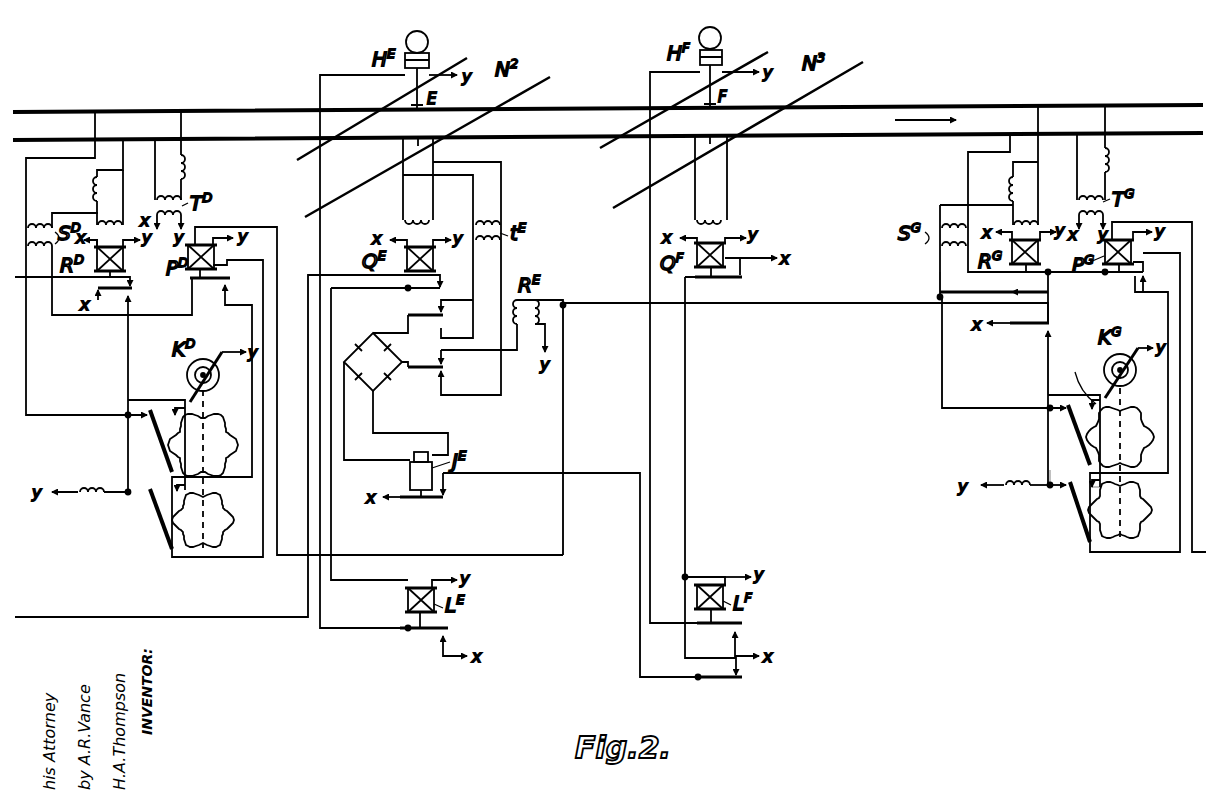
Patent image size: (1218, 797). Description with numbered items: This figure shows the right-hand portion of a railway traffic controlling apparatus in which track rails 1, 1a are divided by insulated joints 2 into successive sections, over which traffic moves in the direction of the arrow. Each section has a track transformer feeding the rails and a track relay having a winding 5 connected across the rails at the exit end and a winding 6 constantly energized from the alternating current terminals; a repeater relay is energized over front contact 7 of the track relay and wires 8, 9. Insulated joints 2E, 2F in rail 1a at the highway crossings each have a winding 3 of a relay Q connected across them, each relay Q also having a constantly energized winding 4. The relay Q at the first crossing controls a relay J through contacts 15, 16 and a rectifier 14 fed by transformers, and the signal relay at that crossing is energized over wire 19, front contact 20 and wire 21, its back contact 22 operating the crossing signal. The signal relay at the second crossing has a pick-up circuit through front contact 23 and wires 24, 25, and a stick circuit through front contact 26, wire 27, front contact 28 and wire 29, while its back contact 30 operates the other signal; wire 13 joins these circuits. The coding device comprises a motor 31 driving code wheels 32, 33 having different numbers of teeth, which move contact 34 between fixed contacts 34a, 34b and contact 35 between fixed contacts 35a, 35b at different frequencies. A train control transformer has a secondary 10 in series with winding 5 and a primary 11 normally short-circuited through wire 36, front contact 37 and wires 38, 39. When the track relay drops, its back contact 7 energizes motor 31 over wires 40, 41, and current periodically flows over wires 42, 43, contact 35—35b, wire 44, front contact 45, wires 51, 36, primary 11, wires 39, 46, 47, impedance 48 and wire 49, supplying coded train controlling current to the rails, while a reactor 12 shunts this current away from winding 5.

The track rail 1 is at (925, 100).
The track rail 1a is at (894, 148).
The insulated joints 2 is at (1057, 132).
The insulated joint 2E is at (412, 129).
The insulated joint 2F is at (704, 128).
The winding of relay Q 3 is at (565, 179).
The winding of relay Q 4 is at (583, 257).
The track relay winding 5 is at (568, 197).
The track relay winding 6 is at (535, 259).
The contact of track relay R 7 is at (573, 390).
The wire 8 is at (1025, 299).
The wire 9 is at (563, 372).
The secondary of transformer S^G 10 is at (963, 215).
The primary of transformer S^G 11 is at (498, 278).
The reactor 12 is at (1013, 190).
The conductor 13 is at (563, 305).
The rectifier 14 is at (360, 352).
The contact of relay Q 15 is at (407, 319).
The contact of relay Q 16 is at (444, 345).
The wire 19 is at (230, 616).
The front contact of relay Q^E 20 is at (360, 290).
The wire 21 is at (331, 490).
The back contact of relay L^E 22 is at (424, 633).
The front contact of relay Q^F 23 is at (710, 278).
The wire 24 is at (685, 336).
The wire 25 is at (696, 577).
The front contact of relay J^E 26 is at (420, 500).
The wire 27 is at (538, 477).
The front contact of relay L^F 28 is at (726, 680).
The wire 29 is at (684, 656).
The back contact of relay L^F 30 is at (728, 628).
The motor 31 is at (677, 372).
The code wheel 32 is at (666, 468).
The code wheel 33 is at (672, 514).
The movable contact 34 is at (610, 438).
The fixed contact 34a is at (1065, 404).
The fixed contact 34b is at (614, 421).
The movable contact member 35 is at (1075, 535).
The fixed contact 35a is at (559, 506).
The fixed contact 35b is at (614, 471).
The wire 36 is at (990, 274).
The front contact of relay R^G 37 is at (1006, 289).
The wire 38 is at (940, 297).
The wire 39 is at (940, 276).
The wire 40 is at (1048, 362).
The wire 41 is at (674, 375).
The wire 42 is at (1086, 386).
The wire 43 is at (1140, 482).
The wire 44 is at (1145, 552).
The front contact of relay P^G 45 is at (1135, 290).
The wire 46 is at (942, 400).
The wire 47 is at (1048, 470).
The impedance 48 is at (1008, 490).
The wire 49 is at (1000, 484).
The wire 51 is at (1119, 288).